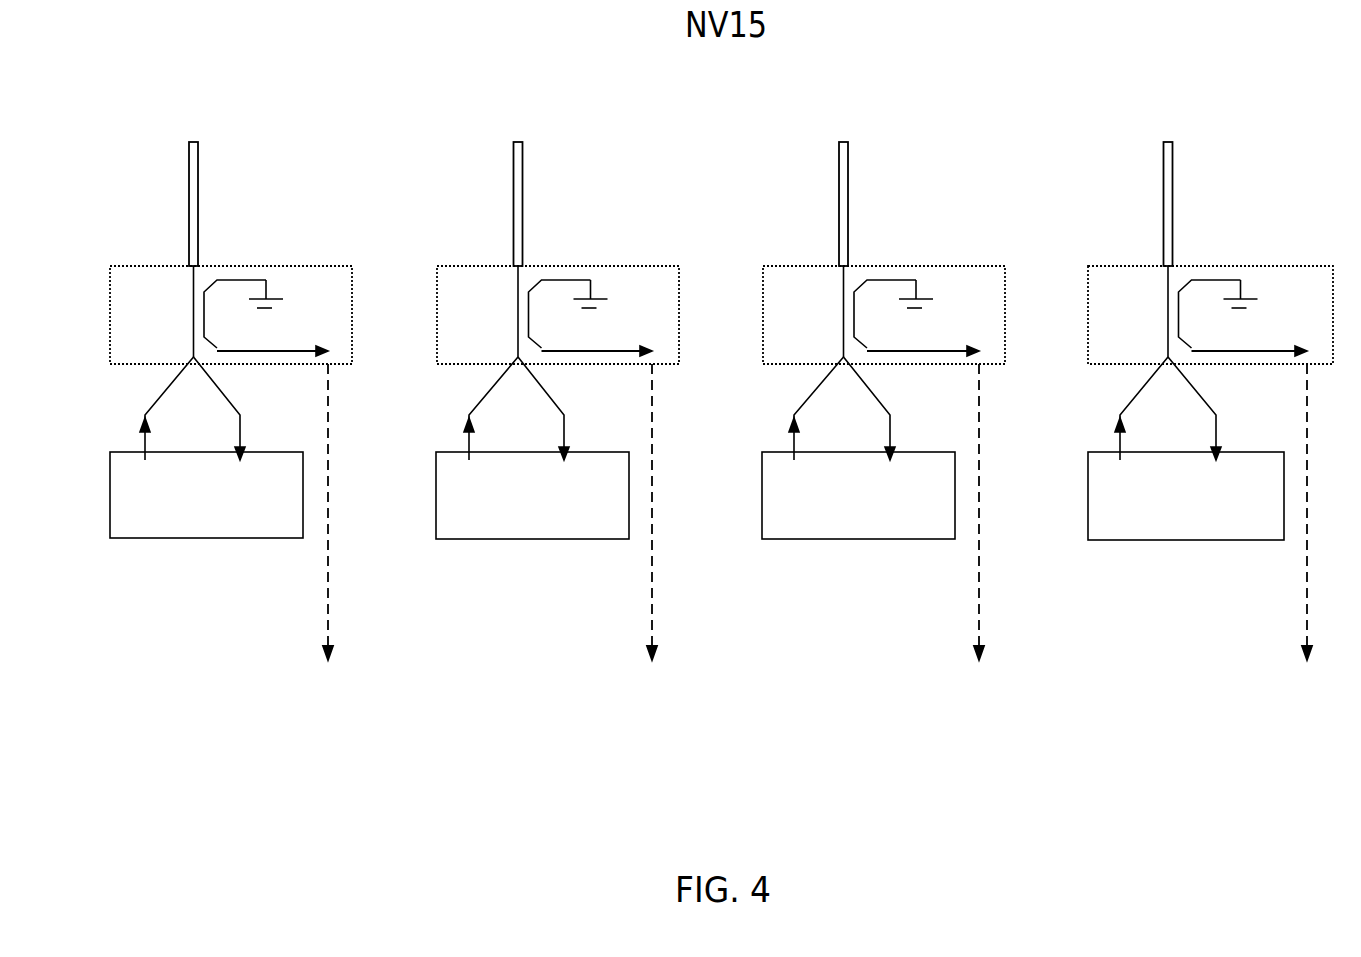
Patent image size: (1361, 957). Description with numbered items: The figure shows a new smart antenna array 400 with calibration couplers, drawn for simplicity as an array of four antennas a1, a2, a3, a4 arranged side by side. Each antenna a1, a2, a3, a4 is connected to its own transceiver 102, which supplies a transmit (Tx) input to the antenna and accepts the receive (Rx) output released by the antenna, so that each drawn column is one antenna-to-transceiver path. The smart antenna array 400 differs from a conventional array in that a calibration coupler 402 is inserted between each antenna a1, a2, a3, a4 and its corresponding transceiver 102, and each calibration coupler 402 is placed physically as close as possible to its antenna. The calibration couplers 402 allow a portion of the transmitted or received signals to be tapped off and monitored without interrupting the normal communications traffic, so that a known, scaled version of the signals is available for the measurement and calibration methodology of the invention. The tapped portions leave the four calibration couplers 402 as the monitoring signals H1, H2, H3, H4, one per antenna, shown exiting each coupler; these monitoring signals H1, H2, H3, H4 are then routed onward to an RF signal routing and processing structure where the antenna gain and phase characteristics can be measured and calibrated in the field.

The smart antenna array 400 is at (240, 77).
The calibration coupler 402 is at (721, 315).
The transceiver 102 is at (697, 448).
The antenna a1 is at (192, 187).
The antenna a2 is at (517, 187).
The antenna a3 is at (842, 187).
The antenna a4 is at (1168, 187).
The monitoring signal H1 is at (343, 512).
The monitoring signal H2 is at (668, 512).
The monitoring signal H3 is at (994, 512).
The monitoring signal H4 is at (1323, 512).